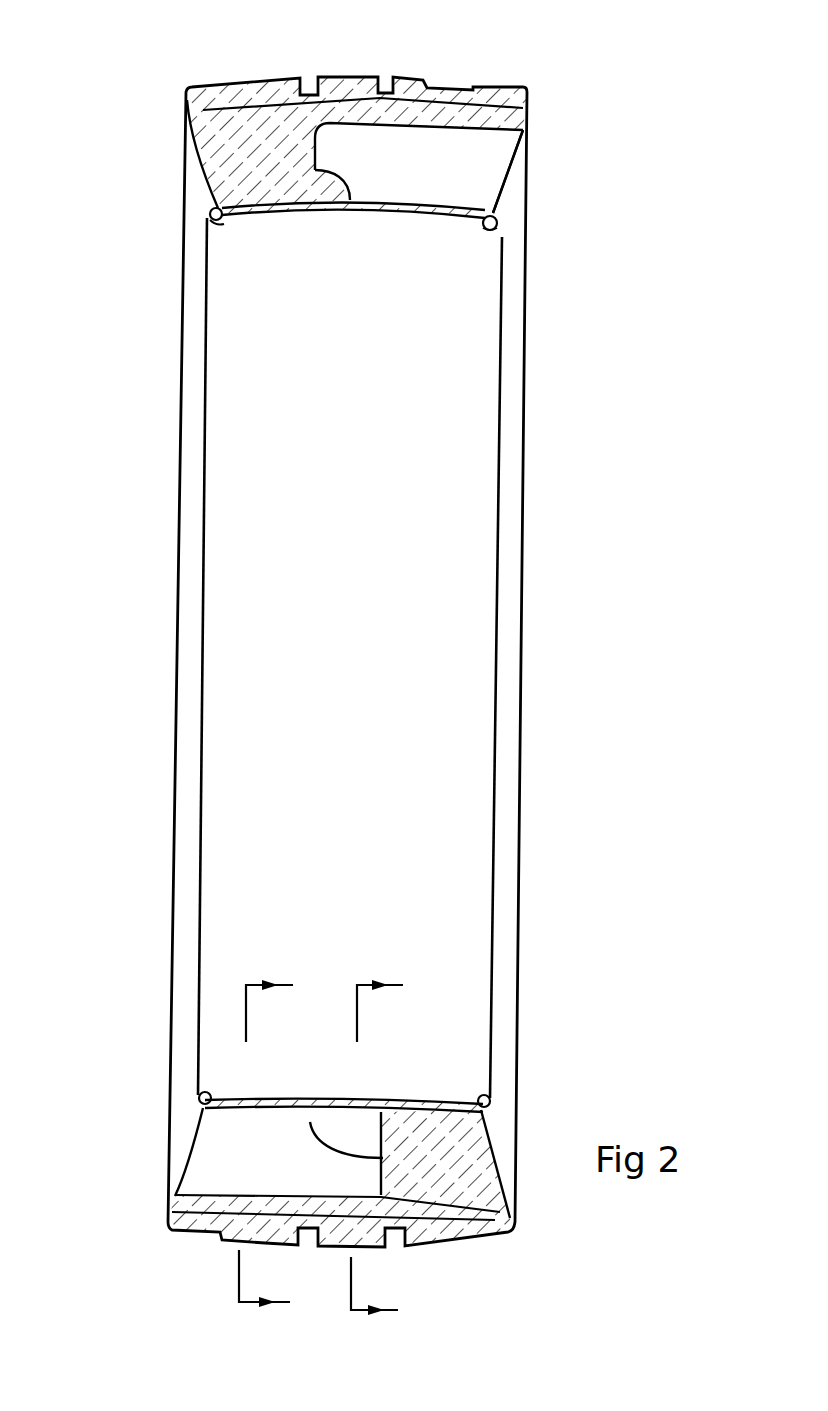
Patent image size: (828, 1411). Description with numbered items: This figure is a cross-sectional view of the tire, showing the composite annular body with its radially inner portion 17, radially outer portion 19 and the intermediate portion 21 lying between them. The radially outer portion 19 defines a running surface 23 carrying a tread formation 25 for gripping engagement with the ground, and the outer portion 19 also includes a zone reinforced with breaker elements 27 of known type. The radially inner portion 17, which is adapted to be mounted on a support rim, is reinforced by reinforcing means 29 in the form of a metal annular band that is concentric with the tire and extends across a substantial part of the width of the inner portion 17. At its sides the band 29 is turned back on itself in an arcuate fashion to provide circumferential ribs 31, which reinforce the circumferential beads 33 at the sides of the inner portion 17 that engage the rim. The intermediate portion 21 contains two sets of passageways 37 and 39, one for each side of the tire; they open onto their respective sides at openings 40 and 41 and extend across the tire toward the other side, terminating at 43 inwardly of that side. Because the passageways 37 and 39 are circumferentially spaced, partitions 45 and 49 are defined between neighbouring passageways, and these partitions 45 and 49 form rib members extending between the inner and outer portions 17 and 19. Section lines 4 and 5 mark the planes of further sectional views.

The section line 4- 4 is at (258, 1148).
The section line 5- 5 is at (370, 1148).
The radially inner portion 17 is at (473, 203).
The radially outer portion 19 is at (528, 126).
The intermediate portion 21 is at (193, 140).
The running surface 23 is at (348, 76).
The tread formation 25 is at (387, 80).
The breaker elements 27 is at (253, 100).
The reinforcing means 29 is at (260, 237).
The circumferential ribs 31 is at (210, 214).
The circumferential beads 33 is at (212, 226).
The passageways 37 is at (213, 1163).
The passageways 39 is at (487, 167).
The openings 40 is at (205, 1132).
The openings 41 is at (528, 148).
The termination of passageways 43 is at (350, 207).
The partition 45 is at (240, 158).
The partition 49 is at (480, 1157).